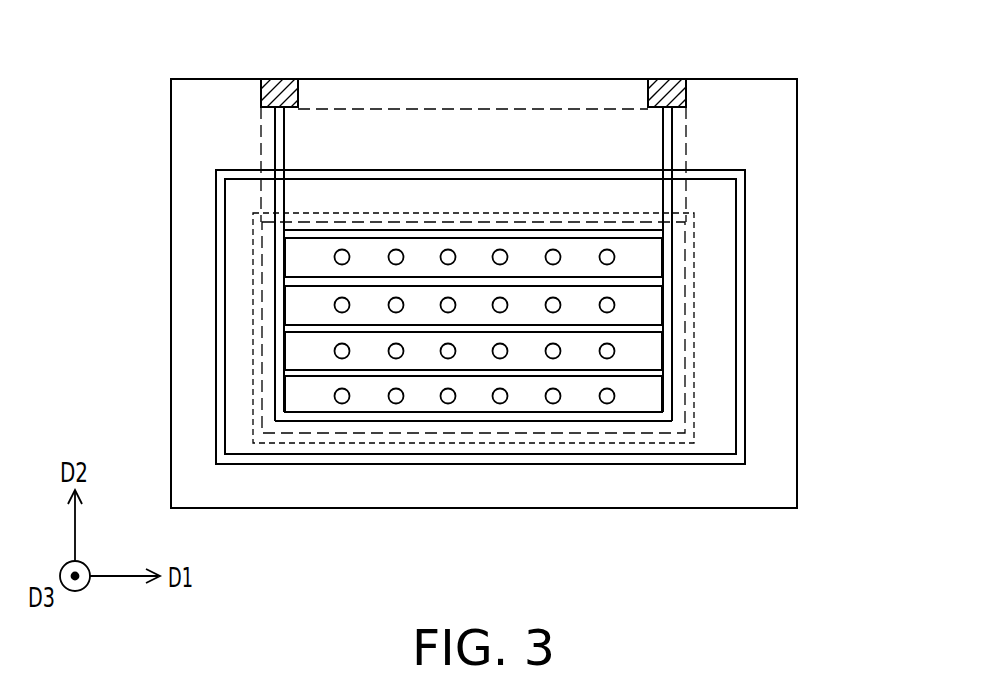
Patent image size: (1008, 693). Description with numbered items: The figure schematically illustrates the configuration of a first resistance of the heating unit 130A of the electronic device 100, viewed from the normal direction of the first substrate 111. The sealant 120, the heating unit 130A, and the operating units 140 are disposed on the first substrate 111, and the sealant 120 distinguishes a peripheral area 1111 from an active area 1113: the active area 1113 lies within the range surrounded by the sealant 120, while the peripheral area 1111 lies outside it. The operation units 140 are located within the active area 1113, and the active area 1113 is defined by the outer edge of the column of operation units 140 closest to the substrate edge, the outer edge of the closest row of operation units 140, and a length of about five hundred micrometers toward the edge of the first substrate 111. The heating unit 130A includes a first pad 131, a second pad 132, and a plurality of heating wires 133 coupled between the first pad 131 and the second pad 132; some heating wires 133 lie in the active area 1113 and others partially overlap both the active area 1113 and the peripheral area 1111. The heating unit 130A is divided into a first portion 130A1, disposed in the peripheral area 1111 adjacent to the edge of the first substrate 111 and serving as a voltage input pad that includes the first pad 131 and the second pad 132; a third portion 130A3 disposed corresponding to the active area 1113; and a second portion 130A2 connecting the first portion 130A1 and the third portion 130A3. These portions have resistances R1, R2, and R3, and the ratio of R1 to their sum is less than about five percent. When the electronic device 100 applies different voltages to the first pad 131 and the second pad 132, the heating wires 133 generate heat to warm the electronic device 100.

The electronic device 100 is at (893, 571).
The first substrate 111 is at (754, 77).
The peripheral area 1111 is at (771, 212).
The active area 1113 is at (253, 260).
The sealant 120 is at (705, 170).
The heating unit 130A is at (274, 132).
The first portion 130A1 is at (260, 93).
The second portion 130A2 is at (260, 147).
The third portion 130A3 is at (262, 311).
The first pad 131 is at (280, 79).
The second pad 132 is at (668, 79).
The heating wires 133 is at (667, 352).
The operation units 140 is at (342, 403).